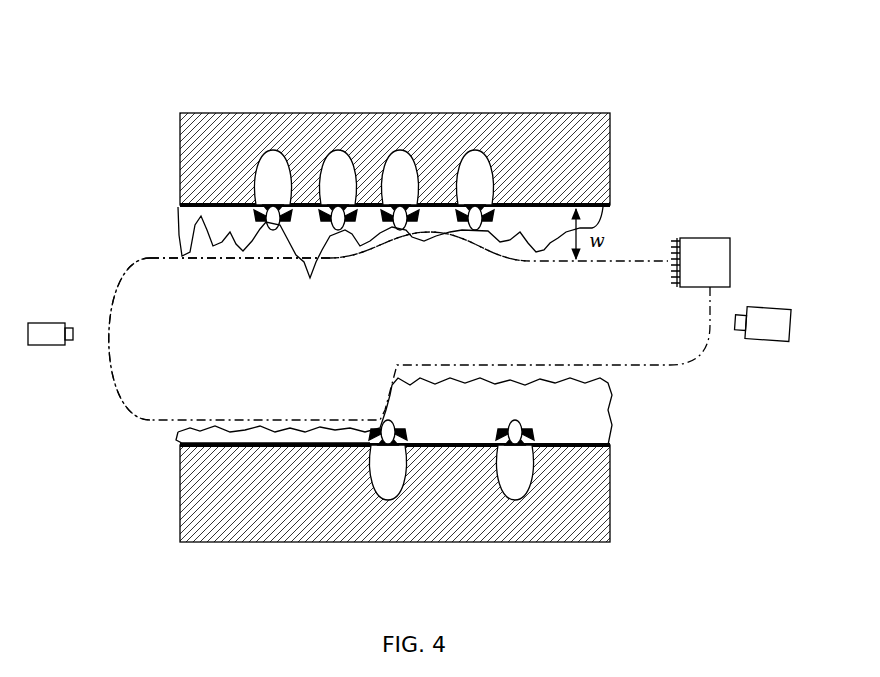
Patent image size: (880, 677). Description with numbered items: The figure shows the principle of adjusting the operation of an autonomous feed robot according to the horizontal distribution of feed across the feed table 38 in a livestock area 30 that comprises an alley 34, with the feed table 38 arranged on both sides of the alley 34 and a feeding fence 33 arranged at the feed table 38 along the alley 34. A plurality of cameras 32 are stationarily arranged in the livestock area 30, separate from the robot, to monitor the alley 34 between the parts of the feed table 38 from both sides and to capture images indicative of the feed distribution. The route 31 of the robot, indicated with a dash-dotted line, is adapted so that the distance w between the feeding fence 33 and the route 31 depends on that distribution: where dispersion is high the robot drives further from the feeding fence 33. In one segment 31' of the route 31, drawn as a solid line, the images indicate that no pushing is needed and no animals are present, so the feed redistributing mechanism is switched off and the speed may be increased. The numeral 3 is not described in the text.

The livestock area 30 is at (585, 86).
The feeding fence 33 is at (586, 197).
The route 31 is at (426, 235).
The segment 31' is at (394, 394).
The component 3 is at (541, 245).
The alley 34 is at (282, 330).
The feed table 38 is at (420, 257).
The cameras 32 is at (41, 320).